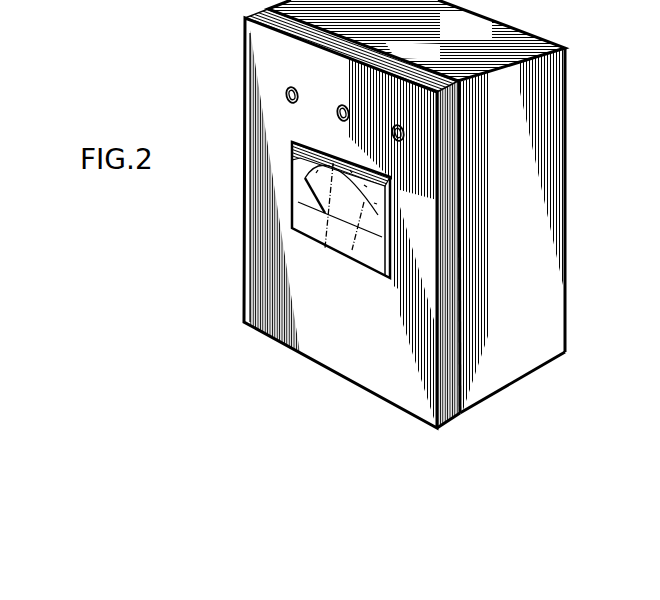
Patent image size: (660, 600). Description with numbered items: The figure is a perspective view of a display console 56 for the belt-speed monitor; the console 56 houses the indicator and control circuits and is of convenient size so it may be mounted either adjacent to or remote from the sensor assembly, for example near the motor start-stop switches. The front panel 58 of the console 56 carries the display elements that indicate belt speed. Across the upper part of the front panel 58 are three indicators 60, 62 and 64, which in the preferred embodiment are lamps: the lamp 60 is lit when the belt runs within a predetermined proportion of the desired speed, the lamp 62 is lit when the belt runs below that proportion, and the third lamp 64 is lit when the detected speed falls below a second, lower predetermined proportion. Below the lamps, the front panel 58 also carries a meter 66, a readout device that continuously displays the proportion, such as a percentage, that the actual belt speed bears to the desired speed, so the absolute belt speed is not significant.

The display console 56 is at (572, 207).
The front panel 58 is at (330, 348).
The indicator lamp 60 is at (292, 86).
The indicator lamp 62 is at (343, 104).
The indicator lamp 64 is at (411, 100).
The meter 66 is at (340, 259).